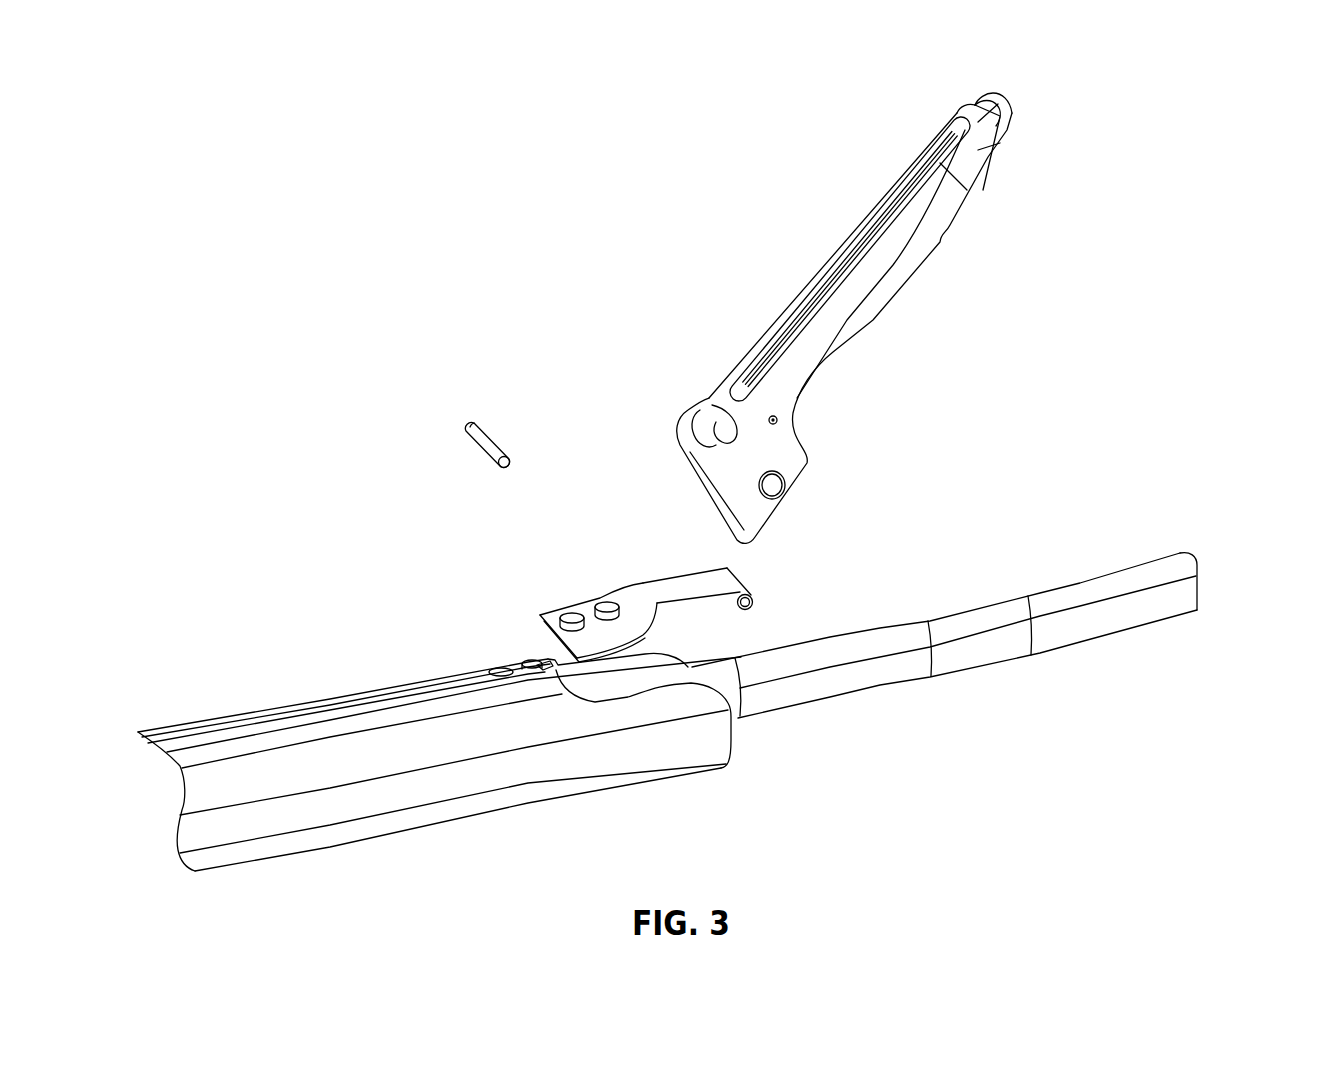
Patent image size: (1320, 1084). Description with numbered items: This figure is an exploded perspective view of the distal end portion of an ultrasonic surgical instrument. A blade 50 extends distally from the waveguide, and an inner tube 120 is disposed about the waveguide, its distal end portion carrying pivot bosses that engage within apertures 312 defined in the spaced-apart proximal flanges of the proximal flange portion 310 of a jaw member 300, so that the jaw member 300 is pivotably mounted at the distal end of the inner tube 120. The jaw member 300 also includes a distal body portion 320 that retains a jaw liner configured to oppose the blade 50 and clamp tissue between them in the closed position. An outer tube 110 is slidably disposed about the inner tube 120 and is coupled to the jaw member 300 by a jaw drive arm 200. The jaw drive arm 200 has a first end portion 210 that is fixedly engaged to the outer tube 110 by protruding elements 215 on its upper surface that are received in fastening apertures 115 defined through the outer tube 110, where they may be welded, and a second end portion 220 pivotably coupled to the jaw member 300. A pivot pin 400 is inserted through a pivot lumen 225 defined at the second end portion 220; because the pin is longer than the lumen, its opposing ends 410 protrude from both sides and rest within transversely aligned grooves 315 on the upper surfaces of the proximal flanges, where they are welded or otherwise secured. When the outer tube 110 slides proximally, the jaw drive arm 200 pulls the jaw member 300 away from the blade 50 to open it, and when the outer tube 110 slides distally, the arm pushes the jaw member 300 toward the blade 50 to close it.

The blade 50 is at (1197, 583).
The outer tube 110 is at (483, 777).
The fastening aperture 115 is at (532, 660).
The inner tube 120 is at (743, 698).
The jaw drive arm 200 is at (634, 500).
The first end portion 210 is at (613, 592).
The protruding element 215 is at (600, 607).
The second end portion 220 is at (727, 568).
The pivot lumen 225 is at (760, 600).
The jaw member 300 is at (833, 210).
The proximal flange portion 310 is at (720, 392).
The aperture 312 is at (780, 487).
The groove 315 is at (730, 437).
The distal body portion 320 is at (975, 105).
The pivot pin 400 is at (493, 443).
The opposing ends 410 is at (468, 428).